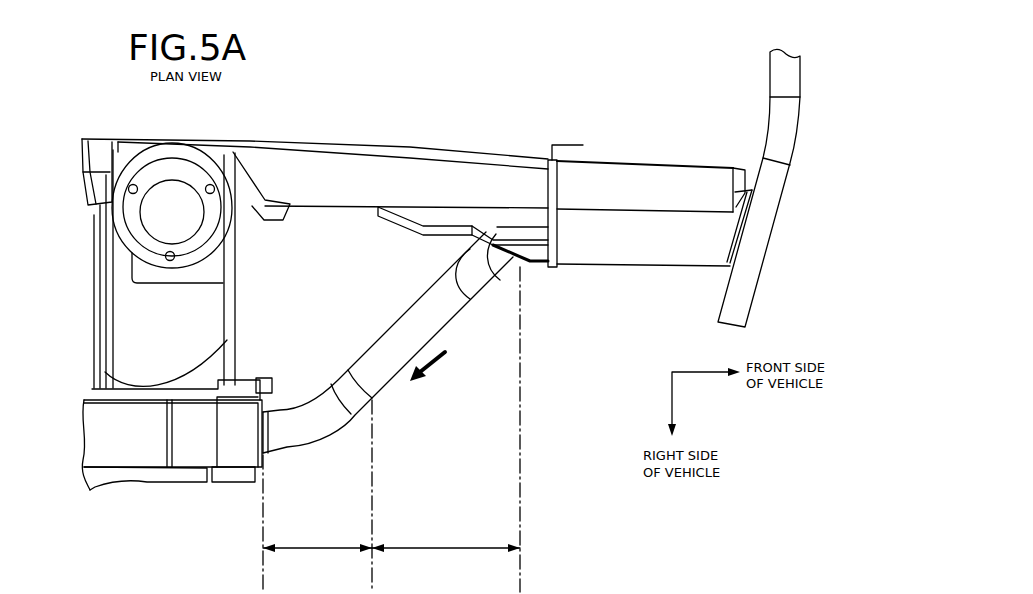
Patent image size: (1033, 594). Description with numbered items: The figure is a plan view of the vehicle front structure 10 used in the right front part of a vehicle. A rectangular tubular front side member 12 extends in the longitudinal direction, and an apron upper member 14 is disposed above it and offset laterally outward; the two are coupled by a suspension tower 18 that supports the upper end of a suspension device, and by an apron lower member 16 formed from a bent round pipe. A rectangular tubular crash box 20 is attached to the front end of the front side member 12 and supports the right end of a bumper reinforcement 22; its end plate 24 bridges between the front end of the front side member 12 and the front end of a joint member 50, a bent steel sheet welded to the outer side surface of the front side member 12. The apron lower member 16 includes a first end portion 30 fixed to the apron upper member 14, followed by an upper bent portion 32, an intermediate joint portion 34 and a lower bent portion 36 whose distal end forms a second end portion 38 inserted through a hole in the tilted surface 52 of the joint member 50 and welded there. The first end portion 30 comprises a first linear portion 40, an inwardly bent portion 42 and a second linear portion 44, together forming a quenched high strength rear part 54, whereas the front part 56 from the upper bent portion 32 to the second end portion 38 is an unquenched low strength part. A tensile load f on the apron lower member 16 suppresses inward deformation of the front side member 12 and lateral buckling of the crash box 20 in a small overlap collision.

The vehicle front structure 10 is at (528, 76).
The front side member 12 is at (369, 168).
The apron upper member 14 is at (120, 450).
The apron lower member 16 is at (358, 308).
The suspension tower 18 is at (208, 266).
The crash box 20 is at (637, 250).
The bumper reinforcement 22 is at (776, 74).
The end plate 24 is at (548, 196).
The first end portion 30 is at (330, 450).
The upper bent portion 32 is at (412, 324).
The intermediate joint portion 34 is at (470, 284).
The lower bent portion 36 is at (507, 263).
The second end portion 38 is at (522, 268).
The first linear portion 40 is at (277, 435).
The inwardly bent portion 42 is at (303, 413).
The second linear portion 44 is at (347, 385).
The joint member 50 is at (465, 215).
The tilted surface 52 is at (478, 249).
The rear part 54 is at (317, 496).
The front part 56 is at (446, 429).